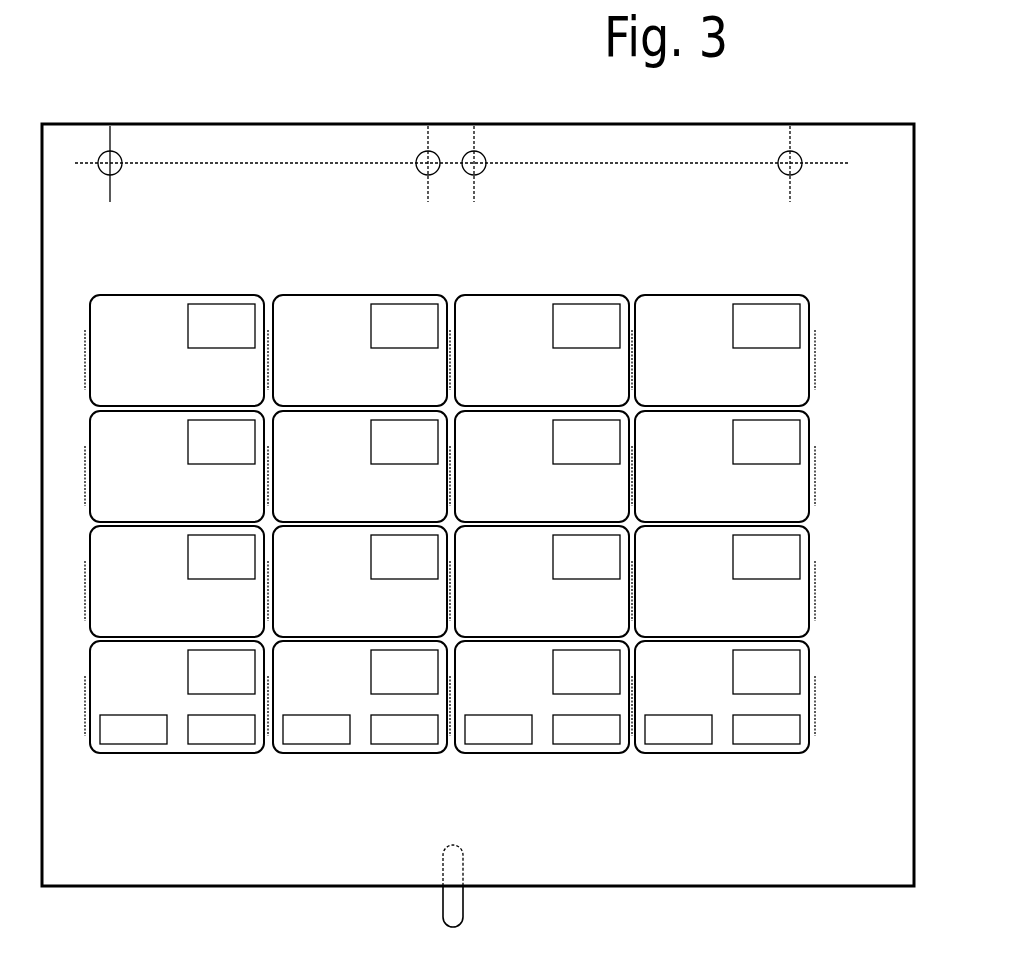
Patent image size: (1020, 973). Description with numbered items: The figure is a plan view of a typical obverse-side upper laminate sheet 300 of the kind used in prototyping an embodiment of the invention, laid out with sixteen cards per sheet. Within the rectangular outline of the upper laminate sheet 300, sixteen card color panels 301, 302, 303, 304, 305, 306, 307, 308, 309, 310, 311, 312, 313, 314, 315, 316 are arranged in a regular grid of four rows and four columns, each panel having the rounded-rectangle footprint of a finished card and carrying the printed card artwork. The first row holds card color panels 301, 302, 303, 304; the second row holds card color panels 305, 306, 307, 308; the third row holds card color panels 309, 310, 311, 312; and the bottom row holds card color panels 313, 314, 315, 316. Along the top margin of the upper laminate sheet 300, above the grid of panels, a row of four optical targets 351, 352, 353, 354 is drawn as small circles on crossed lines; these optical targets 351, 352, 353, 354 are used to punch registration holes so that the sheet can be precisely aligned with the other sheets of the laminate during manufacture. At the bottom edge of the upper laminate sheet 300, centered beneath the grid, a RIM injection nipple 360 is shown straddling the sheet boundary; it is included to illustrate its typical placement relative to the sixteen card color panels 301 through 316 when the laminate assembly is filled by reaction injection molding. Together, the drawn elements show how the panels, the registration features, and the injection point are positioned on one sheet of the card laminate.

The upper laminate sheet 300 is at (374, 76).
The card color panel 301 is at (158, 356).
The card color panel 302 is at (341, 356).
The card color panel 303 is at (523, 356).
The card color panel 304 is at (703, 356).
The card color panel 305 is at (158, 472).
The card color panel 306 is at (341, 472).
The card color panel 307 is at (523, 472).
The card color panel 308 is at (703, 472).
The card color panel 309 is at (158, 587).
The card color panel 310 is at (341, 587).
The card color panel 311 is at (523, 587).
The card color panel 312 is at (703, 587).
The card color panel 313 is at (158, 702).
The card color panel 314 is at (341, 702).
The card color panel 315 is at (523, 702).
The card color panel 316 is at (703, 702).
The optical target 351 is at (118, 172).
The optical target 352 is at (417, 171).
The optical target 353 is at (476, 175).
The optical target 354 is at (780, 172).
The RIM injection nipple 360 is at (443, 893).